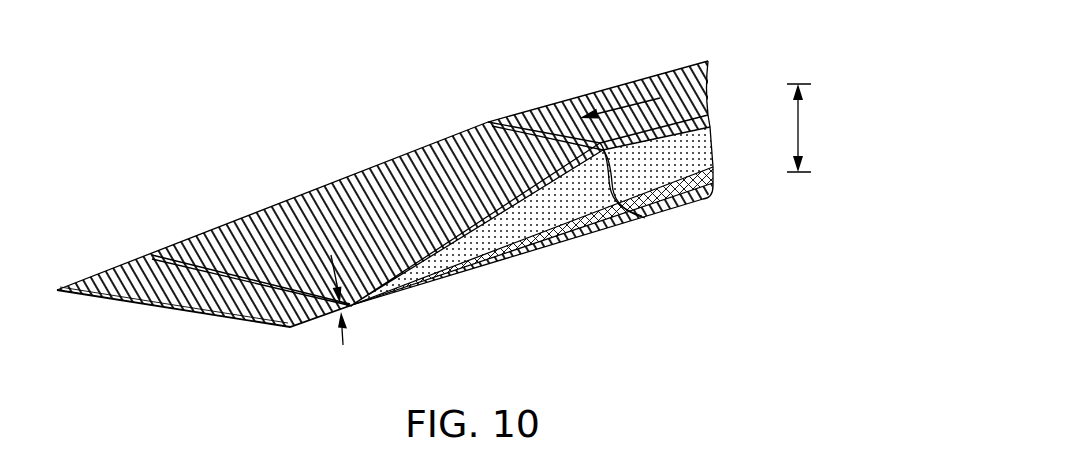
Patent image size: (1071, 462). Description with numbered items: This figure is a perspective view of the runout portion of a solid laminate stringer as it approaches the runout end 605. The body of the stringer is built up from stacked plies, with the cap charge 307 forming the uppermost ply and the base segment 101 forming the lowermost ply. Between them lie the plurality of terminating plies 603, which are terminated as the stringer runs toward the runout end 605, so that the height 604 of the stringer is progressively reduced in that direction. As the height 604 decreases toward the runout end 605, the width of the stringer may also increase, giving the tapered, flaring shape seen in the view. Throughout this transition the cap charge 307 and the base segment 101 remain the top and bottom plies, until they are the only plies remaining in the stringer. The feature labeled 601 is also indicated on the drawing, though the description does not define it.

The lower skin layer 101 is at (703, 190).
The end face of skin panel 307 is at (703, 63).
The upper skin layer 601 is at (620, 107).
The core layer 603 is at (715, 120).
The thickness 604 is at (798, 130).
The leading edge 605 is at (157, 307).